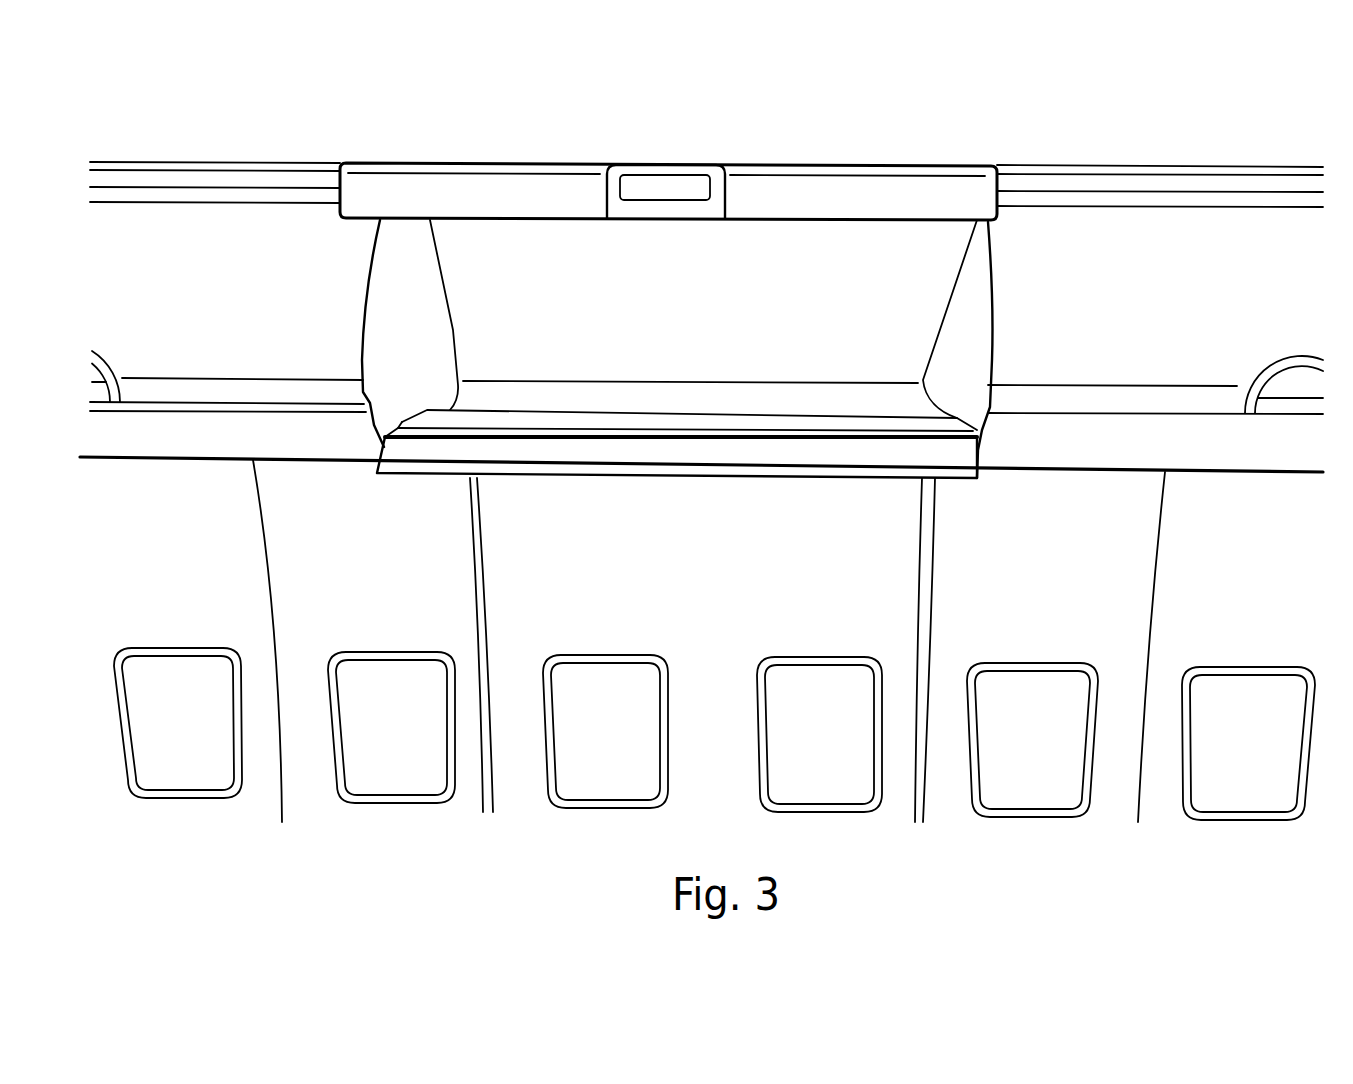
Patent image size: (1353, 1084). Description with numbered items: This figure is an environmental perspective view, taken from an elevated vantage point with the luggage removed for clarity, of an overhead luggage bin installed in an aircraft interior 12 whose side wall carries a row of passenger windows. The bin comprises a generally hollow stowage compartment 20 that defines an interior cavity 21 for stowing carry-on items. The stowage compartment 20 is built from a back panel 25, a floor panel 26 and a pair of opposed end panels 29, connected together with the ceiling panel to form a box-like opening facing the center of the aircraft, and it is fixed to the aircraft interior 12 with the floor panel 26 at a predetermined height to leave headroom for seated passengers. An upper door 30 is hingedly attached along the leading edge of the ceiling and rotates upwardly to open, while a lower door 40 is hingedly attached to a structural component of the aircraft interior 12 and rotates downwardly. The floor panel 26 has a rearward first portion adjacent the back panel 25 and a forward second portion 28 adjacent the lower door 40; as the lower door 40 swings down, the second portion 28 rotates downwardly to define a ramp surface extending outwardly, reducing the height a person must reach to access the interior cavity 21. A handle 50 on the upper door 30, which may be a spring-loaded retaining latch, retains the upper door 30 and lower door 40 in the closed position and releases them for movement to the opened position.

The aircraft interior 12 is at (726, 640).
The stowage compartment 20 is at (617, 304).
The interior cavity 21 is at (568, 346).
The back panel 25 is at (617, 284).
The floor panel 26 is at (681, 370).
The second portion 28 is at (655, 420).
The end panels 29 is at (360, 350).
The upper door 30 is at (467, 188).
The lower door 40 is at (777, 457).
The handle 50 is at (680, 187).